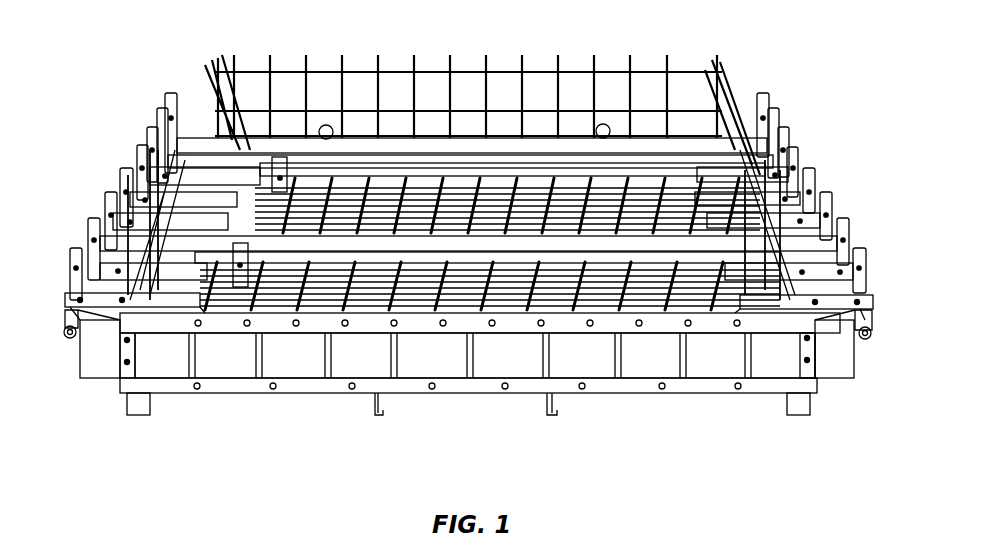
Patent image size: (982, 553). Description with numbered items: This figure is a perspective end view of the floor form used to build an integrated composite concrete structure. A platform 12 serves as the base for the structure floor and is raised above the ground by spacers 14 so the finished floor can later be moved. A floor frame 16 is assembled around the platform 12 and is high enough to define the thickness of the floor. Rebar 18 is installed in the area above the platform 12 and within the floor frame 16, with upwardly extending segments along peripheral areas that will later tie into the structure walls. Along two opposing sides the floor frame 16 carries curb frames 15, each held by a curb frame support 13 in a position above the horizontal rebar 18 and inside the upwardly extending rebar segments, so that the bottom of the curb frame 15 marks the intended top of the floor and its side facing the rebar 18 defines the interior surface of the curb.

The platform 12 is at (295, 388).
The curb frame support 13 is at (90, 246).
The spacers 14 is at (378, 416).
The curb frame 15 is at (160, 160).
The floor frame 16 is at (230, 372).
The rebar 18 is at (568, 70).